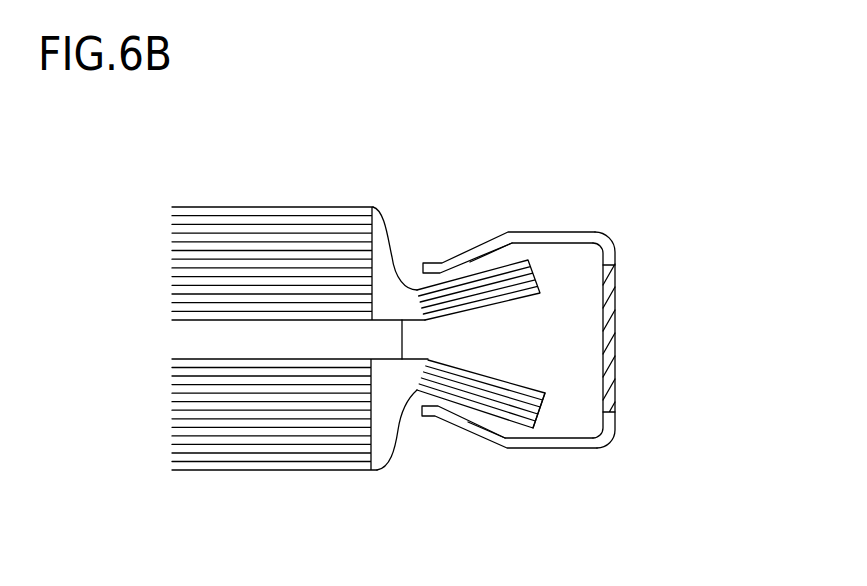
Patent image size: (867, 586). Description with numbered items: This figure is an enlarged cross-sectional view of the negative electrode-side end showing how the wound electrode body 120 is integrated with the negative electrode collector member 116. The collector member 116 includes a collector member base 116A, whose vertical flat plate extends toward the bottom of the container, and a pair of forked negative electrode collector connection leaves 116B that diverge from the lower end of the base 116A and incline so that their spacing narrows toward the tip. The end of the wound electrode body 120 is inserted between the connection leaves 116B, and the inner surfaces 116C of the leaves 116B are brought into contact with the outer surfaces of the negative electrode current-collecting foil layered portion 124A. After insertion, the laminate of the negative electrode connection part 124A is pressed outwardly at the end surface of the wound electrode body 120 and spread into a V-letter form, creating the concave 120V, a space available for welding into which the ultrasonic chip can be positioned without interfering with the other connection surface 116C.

The wound electrode body 120 is at (446, 304).
The concave 120V is at (520, 345).
The negative electrode current-collecting foil layered portion 124A is at (540, 413).
The negative electrode collector member 116 is at (566, 327).
The collector member base 116A is at (613, 346).
The negative electrode collector connection leaves 116B is at (474, 250).
The inner surfaces 116C is at (511, 252).